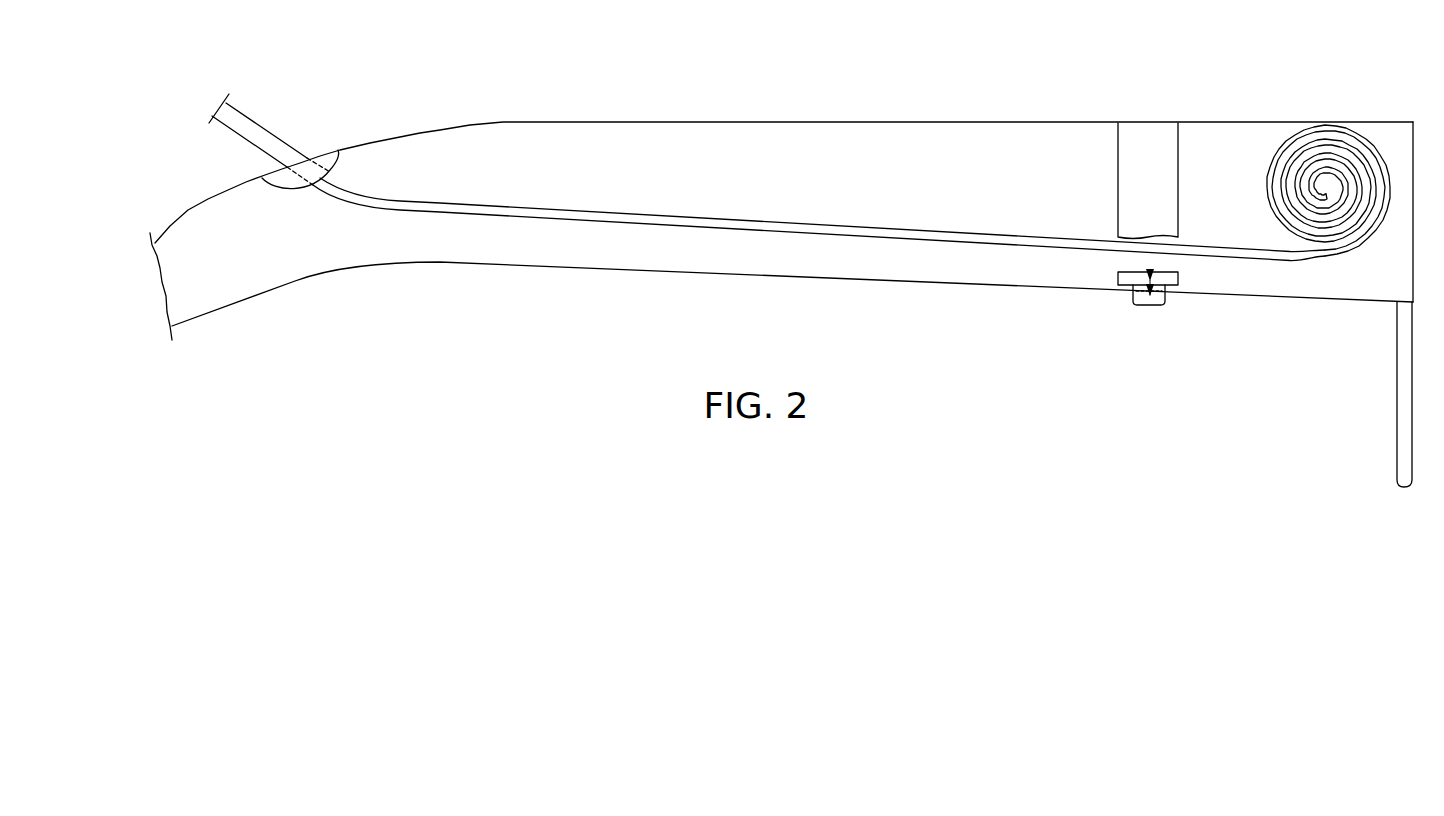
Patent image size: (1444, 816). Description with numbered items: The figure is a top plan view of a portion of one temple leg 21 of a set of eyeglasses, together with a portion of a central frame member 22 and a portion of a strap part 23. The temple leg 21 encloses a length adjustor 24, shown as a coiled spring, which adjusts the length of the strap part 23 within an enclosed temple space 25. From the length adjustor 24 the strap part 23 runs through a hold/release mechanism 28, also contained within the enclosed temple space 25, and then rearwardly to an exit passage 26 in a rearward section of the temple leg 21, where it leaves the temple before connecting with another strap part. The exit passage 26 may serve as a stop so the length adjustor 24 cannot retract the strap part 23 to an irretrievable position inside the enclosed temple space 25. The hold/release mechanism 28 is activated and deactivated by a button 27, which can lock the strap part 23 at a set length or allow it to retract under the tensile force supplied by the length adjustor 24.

The temple leg 21 is at (847, 100).
The central frame member 22 is at (1398, 418).
The strap part 23 is at (508, 203).
The length adjustor 24 is at (1377, 139).
The enclosed temple space 25 is at (1026, 195).
The exit passage 26 is at (332, 151).
The button 27 is at (1158, 307).
The hold/release mechanism 28 is at (1162, 192).